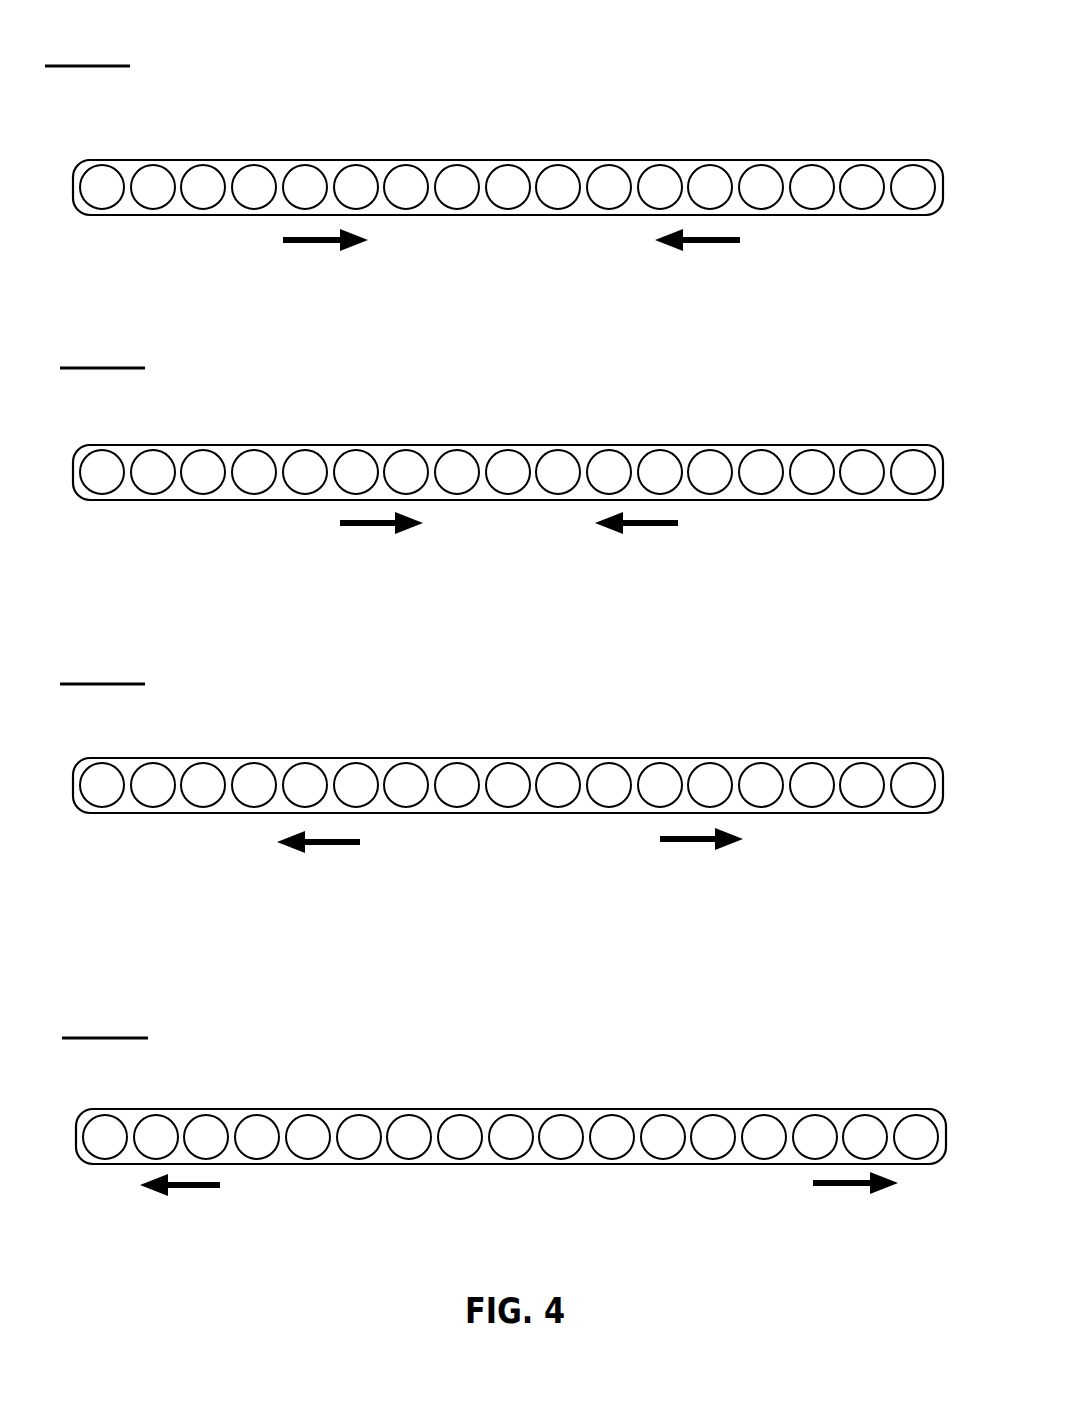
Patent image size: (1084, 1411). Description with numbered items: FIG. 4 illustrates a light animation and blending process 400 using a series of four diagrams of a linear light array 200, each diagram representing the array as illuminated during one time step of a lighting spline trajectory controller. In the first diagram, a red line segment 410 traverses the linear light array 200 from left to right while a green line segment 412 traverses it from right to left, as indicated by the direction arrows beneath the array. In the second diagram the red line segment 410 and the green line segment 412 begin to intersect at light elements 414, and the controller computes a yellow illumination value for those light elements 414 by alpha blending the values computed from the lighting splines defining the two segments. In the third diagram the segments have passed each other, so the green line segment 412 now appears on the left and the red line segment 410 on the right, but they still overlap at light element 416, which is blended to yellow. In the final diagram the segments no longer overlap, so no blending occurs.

The light animation and blending process 400 is at (878, 52).
The linear light array 200 is at (128, 240).
The red line segment 410 is at (225, 212).
The green line segment 412 is at (793, 211).
The light elements 414 is at (552, 497).
The light element 416 is at (508, 813).